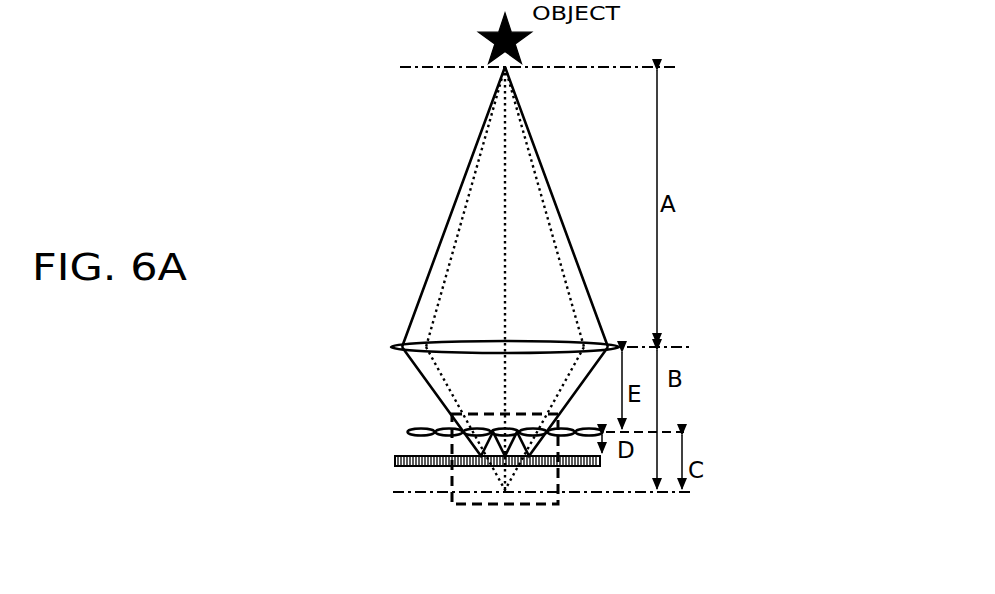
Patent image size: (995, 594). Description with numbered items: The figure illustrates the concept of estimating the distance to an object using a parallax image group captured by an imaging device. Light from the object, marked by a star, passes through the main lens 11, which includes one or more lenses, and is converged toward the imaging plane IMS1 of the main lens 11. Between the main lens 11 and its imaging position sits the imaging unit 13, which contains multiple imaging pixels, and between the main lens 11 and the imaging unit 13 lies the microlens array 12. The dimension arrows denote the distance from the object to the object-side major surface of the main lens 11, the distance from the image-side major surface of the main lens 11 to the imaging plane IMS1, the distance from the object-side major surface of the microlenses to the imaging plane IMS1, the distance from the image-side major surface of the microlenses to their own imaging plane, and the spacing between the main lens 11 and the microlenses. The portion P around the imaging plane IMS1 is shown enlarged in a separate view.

The main lens 11 is at (392, 347).
The microlens array 12 is at (406, 432).
The imaging unit 13 is at (395, 461).
The imaging plane IMS1 is at (452, 504).
The portion P is at (507, 505).